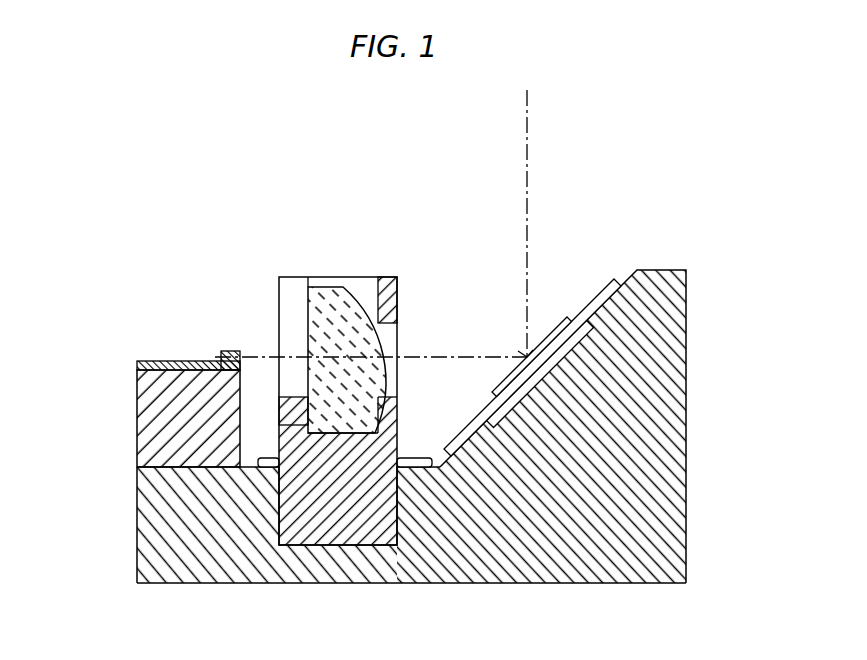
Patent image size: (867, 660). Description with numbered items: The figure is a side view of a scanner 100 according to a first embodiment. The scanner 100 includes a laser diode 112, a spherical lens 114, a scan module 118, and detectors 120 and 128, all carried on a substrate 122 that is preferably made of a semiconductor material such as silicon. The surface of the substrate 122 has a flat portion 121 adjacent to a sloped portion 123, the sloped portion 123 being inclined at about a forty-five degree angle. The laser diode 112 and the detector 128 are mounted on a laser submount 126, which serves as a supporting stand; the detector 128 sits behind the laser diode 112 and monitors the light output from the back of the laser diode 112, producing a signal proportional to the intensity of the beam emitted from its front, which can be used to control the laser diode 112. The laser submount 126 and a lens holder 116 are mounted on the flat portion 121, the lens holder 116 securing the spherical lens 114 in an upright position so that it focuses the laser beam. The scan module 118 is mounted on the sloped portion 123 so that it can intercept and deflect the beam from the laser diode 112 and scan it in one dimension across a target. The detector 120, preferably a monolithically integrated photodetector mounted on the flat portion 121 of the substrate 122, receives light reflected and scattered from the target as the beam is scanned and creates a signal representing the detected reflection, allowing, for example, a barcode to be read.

The scanner 100 is at (285, 186).
The laser diode 112 is at (228, 352).
The spherical lens 114 is at (323, 290).
The lens holder 116 is at (397, 408).
The scan module 118 is at (600, 300).
The detector 120 is at (408, 460).
The flat portion 121 is at (137, 490).
The substrate 122 is at (497, 585).
The sloped portion 123 is at (641, 270).
The laser submount 126 is at (147, 405).
The detector 128 is at (168, 362).